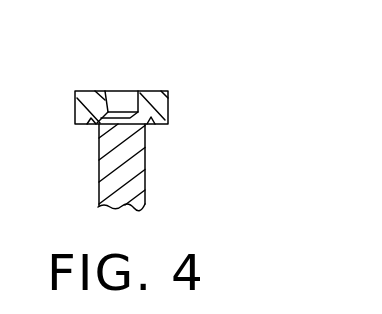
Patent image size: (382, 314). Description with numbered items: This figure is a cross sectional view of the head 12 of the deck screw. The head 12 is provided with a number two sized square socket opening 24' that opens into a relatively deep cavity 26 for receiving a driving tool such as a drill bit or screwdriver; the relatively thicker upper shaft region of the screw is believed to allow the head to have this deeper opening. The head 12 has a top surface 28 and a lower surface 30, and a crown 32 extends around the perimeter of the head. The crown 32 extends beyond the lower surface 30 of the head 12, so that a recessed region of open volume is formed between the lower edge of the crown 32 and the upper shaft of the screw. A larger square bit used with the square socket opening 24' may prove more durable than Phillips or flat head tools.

The head 12 is at (168, 105).
The square socket opening 24' is at (178, 81).
The cavity 26 is at (113, 106).
The top surface 28 is at (88, 90).
The lower surface 30 is at (158, 125).
The crown 32 is at (95, 125).